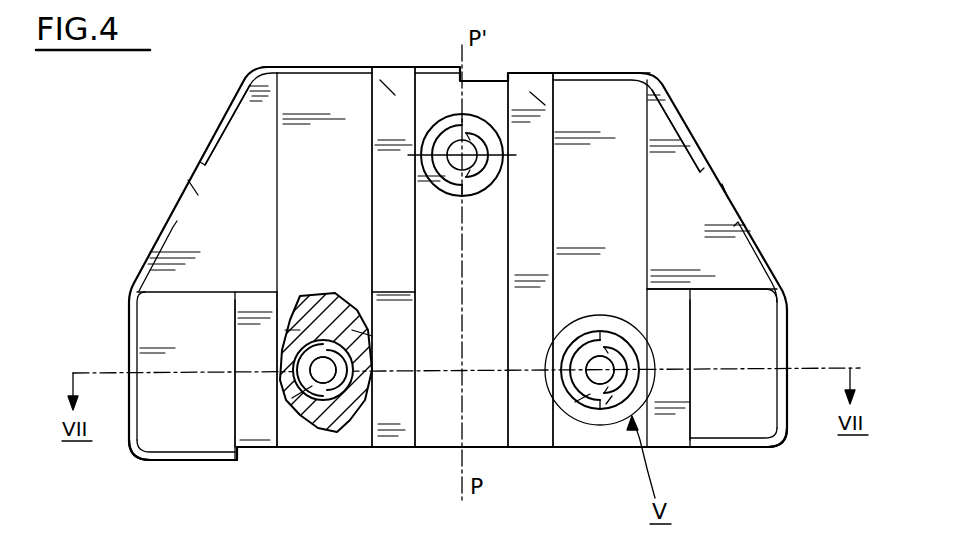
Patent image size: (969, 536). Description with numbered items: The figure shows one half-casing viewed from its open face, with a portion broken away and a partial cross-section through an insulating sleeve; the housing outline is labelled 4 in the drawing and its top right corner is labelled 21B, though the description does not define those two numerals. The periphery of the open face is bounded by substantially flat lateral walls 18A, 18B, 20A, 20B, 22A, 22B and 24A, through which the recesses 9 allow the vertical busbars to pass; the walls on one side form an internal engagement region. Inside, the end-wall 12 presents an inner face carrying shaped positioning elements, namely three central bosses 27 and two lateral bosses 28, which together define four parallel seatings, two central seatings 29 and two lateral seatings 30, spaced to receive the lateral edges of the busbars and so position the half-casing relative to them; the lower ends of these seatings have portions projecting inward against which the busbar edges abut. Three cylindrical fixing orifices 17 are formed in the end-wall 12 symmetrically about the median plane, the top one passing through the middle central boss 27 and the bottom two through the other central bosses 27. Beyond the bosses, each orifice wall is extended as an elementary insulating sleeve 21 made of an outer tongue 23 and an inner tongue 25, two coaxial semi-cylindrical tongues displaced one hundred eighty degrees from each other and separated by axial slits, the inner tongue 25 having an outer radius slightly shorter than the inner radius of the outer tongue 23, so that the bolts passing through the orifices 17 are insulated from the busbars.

The housing 4 is at (690, 92).
The recesses 9 is at (390, 90).
The end-wall 12 is at (244, 233).
The cylindrical fixing orifices 17 is at (313, 357).
The lateral wall 18A is at (186, 458).
The lateral wall 18B is at (746, 448).
The lateral wall 20A is at (132, 338).
The lateral wall 20B is at (780, 338).
The elementary insulating sleeve 21 is at (494, 112).
The top corner 21B is at (622, 72).
The lateral wall 22A is at (224, 124).
The lateral wall 22B is at (698, 134).
The outer tongue 23 is at (316, 318).
The lateral wall 24A is at (298, 68).
The inner tongue 25 is at (370, 332).
The central bosses 27 is at (331, 178).
The lateral bosses 28 is at (197, 405).
The central seatings 29 is at (402, 408).
The lateral seatings 30 is at (257, 420).